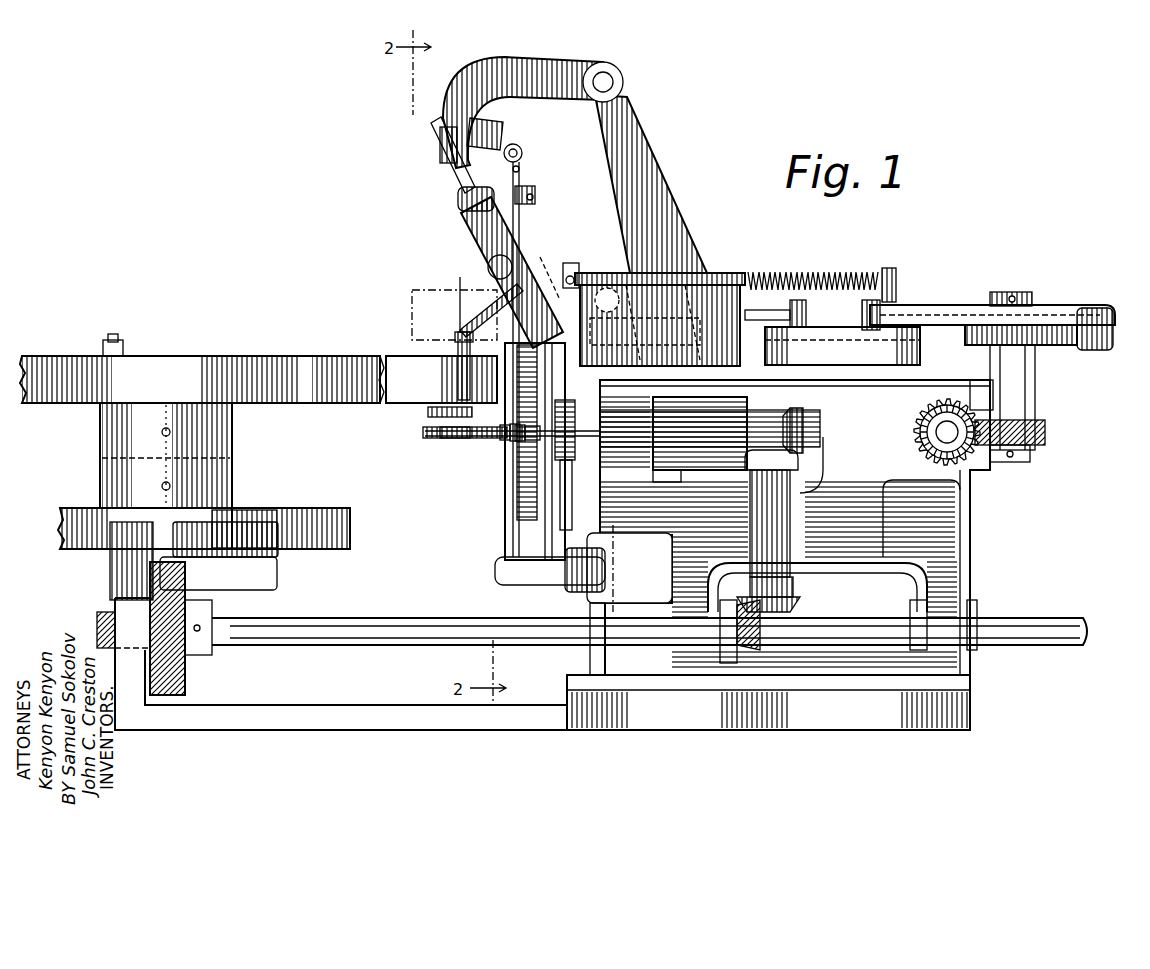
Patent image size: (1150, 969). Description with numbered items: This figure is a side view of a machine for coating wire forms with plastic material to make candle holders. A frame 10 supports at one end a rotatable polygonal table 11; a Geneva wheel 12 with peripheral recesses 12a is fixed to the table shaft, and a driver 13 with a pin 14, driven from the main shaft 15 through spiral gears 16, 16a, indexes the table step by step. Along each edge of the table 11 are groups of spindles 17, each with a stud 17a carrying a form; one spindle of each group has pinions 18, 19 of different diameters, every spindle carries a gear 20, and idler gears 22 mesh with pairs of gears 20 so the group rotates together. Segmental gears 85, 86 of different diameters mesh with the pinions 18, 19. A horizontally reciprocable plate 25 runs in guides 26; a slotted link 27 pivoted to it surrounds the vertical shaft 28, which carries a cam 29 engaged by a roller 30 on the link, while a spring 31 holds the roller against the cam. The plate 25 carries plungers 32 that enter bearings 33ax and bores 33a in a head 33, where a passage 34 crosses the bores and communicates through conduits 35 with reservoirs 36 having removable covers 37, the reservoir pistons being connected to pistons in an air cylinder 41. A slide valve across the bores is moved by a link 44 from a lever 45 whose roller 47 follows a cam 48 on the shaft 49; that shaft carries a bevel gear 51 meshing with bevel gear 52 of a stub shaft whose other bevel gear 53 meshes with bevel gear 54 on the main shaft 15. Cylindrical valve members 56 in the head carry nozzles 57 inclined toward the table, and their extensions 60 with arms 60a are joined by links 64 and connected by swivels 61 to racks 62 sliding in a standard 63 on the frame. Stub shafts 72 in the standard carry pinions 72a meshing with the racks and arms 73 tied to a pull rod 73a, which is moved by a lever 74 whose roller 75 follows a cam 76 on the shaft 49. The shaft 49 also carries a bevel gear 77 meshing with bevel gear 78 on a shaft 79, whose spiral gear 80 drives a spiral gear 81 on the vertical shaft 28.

The frame 10 is at (970, 538).
The rotatable table 11 is at (352, 368).
The Geneva wheel 12 is at (335, 547).
The peripheral recesses 12a is at (302, 516).
The driver 13 is at (122, 568).
The pin 14 is at (250, 512).
The main shaft 15 is at (402, 645).
The spiral gear 16 is at (186, 688).
The spiral gear 16a is at (215, 645).
The spindles 17 is at (455, 350).
The stud 17a is at (112, 336).
The pinion 18 is at (430, 432).
The pinion 19 is at (448, 440).
The gear 20 is at (471, 430).
The idler gears 22 is at (428, 412).
The horizontally reciprocable plate 25 is at (806, 320).
The guides 26 is at (826, 334).
The link 27 is at (936, 310).
The vertical shaft 28 is at (1016, 292).
The cam 29 is at (1050, 334).
The roller 30 is at (1110, 336).
The spring 31 is at (820, 270).
The plungers 32 is at (770, 310).
The head 33 is at (454, 307).
The bores 33a is at (640, 326).
The bearings 33ax is at (621, 298).
The passage 34 is at (612, 280).
The conduits 35 is at (544, 267).
The reservoirs 36 is at (680, 322).
The removable covers 37 is at (664, 268).
The air cylinder 41 is at (590, 598).
The link 44 is at (575, 265).
The lever 45 is at (520, 422).
The roller 47 is at (562, 452).
The cam 48 is at (568, 480).
The shaft 49 is at (720, 426).
The bevel gear 51 is at (791, 424).
The bevel gear 52 is at (800, 462).
The bevel gear 53 is at (800, 607).
The bevel gear 54 is at (760, 640).
The cylindrical valve members 56 is at (488, 265).
The nozzle 57 is at (490, 316).
The extensions 60 is at (478, 238).
The arms 60a is at (535, 190).
The swivels 61 is at (458, 198).
The racks 62 is at (436, 128).
The standard 63 is at (540, 76).
The links 64 is at (533, 198).
The stub shafts 72 is at (504, 131).
The pinion 72a is at (440, 148).
The arm 73 is at (520, 169).
The pull rod 73a is at (522, 150).
The lever 74 is at (522, 232).
The roller 75 is at (531, 428).
The cam 76 is at (537, 520).
The bevel gear 77 is at (935, 446).
The bevel gear 78 is at (983, 452).
The shaft 79 is at (945, 442).
The spiral gear 80 is at (975, 458).
The spiral gear 81 is at (1047, 433).
The segmental gear 85 is at (500, 440).
The segmental gear 86 is at (512, 442).